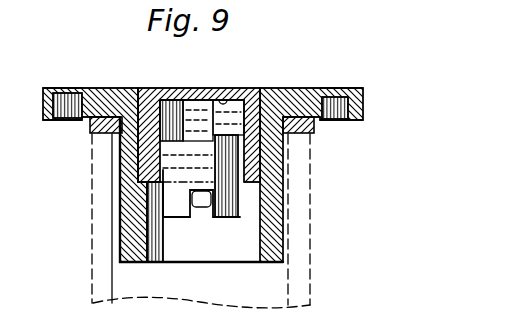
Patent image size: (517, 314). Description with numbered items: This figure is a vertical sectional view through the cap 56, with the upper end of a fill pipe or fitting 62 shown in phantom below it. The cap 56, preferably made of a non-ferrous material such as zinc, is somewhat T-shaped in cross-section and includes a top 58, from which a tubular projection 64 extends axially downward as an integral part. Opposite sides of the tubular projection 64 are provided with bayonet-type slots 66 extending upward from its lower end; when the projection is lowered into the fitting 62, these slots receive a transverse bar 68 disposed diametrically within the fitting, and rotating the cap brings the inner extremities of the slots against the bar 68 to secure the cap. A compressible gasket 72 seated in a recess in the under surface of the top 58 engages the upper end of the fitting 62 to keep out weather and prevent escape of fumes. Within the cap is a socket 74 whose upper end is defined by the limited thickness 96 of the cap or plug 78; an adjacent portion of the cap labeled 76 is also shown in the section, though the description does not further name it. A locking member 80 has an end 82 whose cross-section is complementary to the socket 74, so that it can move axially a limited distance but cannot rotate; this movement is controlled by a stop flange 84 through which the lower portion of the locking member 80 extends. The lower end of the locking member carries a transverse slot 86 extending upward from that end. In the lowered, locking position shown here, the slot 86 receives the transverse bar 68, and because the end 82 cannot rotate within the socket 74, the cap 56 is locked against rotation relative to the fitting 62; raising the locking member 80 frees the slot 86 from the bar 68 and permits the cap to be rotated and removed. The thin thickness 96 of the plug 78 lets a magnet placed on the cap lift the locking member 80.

The cap 56 is at (284, 92).
The top 58 is at (112, 88).
The fitting 62 is at (312, 205).
The tubular projection 64 is at (120, 230).
The bayonet-type slots 66 is at (253, 208).
The transverse bar 68 is at (205, 200).
The compressible gasket 72 is at (309, 134).
The socket 74 is at (233, 100).
The flange portion 76 is at (307, 88).
The plug 78 is at (158, 88).
The locking member 80 is at (155, 215).
The end of locking member 82 is at (122, 155).
The stop flange 84 is at (150, 187).
The transverse slot 86 is at (202, 206).
The limited thickness 96 is at (184, 88).